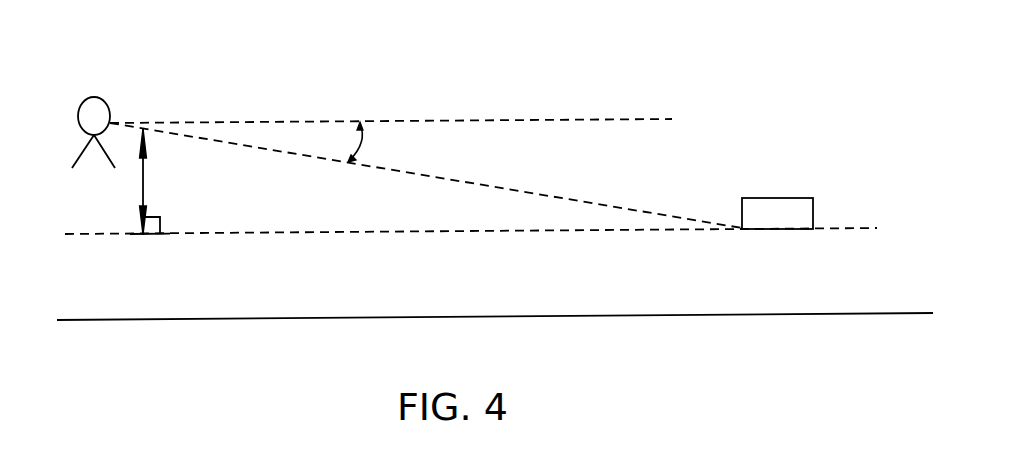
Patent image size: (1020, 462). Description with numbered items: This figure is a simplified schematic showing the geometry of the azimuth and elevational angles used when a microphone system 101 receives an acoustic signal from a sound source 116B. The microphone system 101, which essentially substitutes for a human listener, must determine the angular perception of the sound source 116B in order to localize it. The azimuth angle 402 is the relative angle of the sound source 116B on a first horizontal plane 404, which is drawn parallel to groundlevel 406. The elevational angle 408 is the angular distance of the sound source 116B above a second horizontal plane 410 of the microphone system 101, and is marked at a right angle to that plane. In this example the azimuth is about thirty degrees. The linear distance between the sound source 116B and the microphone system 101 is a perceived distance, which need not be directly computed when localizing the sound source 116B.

The sound source 116B is at (93, 94).
The first horizontal plane 404 is at (547, 118).
The azimuth angle 402 is at (363, 145).
The elevational angle 408 is at (147, 178).
The second horizontal plane 410 is at (380, 235).
The microphone system 101 is at (781, 198).
The groundlevel 406 is at (829, 312).